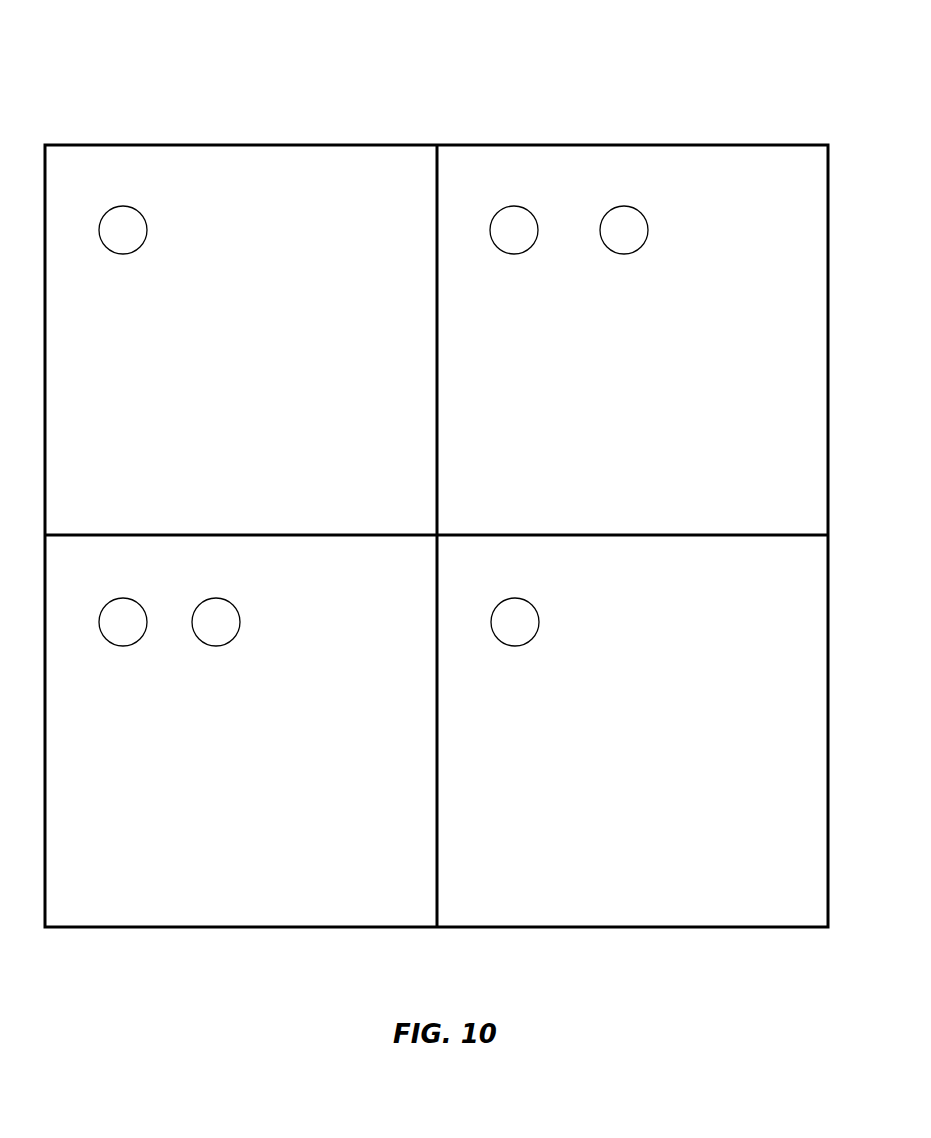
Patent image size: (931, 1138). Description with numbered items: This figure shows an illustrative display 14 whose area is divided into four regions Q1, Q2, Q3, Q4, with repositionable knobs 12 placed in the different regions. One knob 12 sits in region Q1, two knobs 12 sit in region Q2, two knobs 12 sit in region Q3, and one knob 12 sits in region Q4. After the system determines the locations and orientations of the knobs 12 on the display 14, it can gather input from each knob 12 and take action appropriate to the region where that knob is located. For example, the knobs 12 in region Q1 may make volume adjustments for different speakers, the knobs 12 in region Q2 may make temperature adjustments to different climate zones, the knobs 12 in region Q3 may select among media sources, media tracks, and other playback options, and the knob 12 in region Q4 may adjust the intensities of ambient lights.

The display 14 is at (406, 92).
The knobs 12 is at (123, 254).
The region Q1 is at (396, 178).
The region Q2 is at (791, 178).
The region Q3 is at (396, 573).
The region Q4 is at (791, 573).